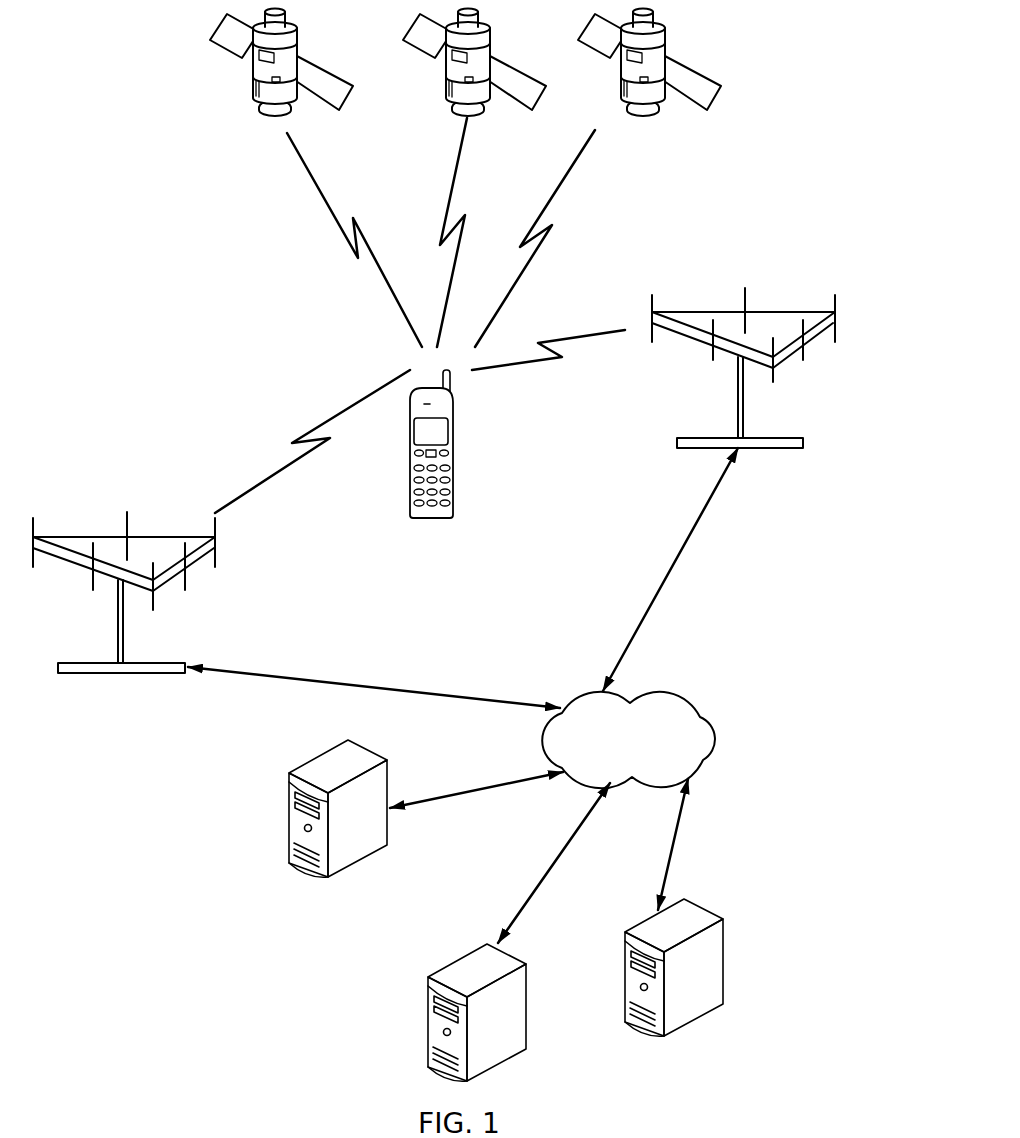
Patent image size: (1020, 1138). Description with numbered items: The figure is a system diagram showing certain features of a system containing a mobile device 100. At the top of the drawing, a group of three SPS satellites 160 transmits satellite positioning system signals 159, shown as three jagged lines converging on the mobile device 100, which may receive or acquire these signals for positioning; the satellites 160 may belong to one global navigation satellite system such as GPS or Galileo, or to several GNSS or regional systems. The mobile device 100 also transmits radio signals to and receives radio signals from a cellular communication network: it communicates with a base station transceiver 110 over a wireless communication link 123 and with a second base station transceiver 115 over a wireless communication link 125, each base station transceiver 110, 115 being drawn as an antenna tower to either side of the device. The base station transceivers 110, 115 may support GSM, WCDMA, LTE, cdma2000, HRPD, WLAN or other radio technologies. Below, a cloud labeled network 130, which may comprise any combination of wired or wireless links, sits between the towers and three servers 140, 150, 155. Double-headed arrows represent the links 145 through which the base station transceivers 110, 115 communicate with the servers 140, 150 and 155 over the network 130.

The mobile device 100 is at (410, 447).
The base station transceiver 110 is at (775, 448).
The base station transceiver 115 is at (107, 673).
The wireless communication link 123 is at (520, 363).
The wireless communication link 125 is at (256, 487).
The network 130 is at (718, 715).
The server 140 is at (365, 749).
The links 145 is at (323, 682).
The server 150 is at (723, 919).
The server 155 is at (526, 964).
The satellite positioning system (SPS) signals 159 is at (316, 183).
The SPS satellites 160 is at (176, 75).